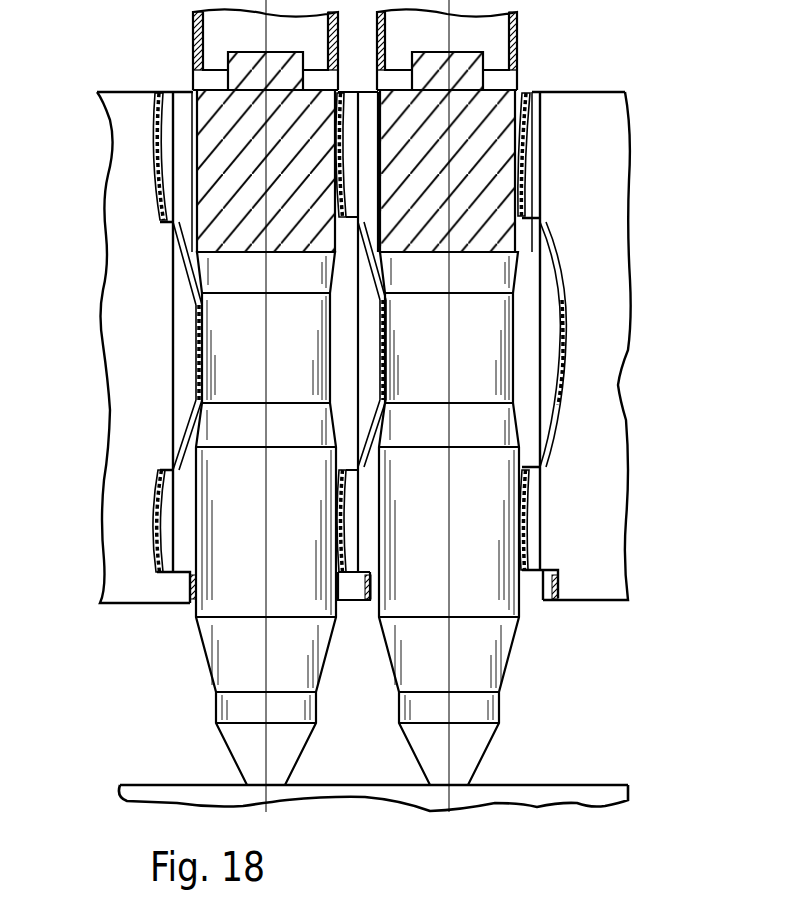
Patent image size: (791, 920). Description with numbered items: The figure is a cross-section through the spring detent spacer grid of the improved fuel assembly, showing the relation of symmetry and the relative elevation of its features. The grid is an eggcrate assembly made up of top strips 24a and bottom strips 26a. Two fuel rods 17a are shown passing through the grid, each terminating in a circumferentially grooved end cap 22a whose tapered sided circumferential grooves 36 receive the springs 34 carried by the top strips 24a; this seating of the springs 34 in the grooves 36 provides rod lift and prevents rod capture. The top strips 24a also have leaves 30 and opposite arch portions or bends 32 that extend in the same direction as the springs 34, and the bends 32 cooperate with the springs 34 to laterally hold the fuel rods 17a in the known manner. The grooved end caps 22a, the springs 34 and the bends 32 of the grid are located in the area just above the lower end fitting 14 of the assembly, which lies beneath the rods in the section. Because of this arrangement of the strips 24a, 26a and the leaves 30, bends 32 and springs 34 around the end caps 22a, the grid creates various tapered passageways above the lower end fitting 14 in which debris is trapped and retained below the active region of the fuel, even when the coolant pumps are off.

The lower end fitting 14 is at (562, 785).
The fuel rods 17a is at (193, 42).
The circumferentially grooved end caps 22a is at (197, 93).
The top strips 24a is at (540, 377).
The bottom strips 26a is at (128, 175).
The leaves 30 is at (193, 590).
The arch portions or bends 32 is at (153, 130).
The springs 34 is at (193, 350).
The tapered sided circumferential grooves 36 is at (215, 318).